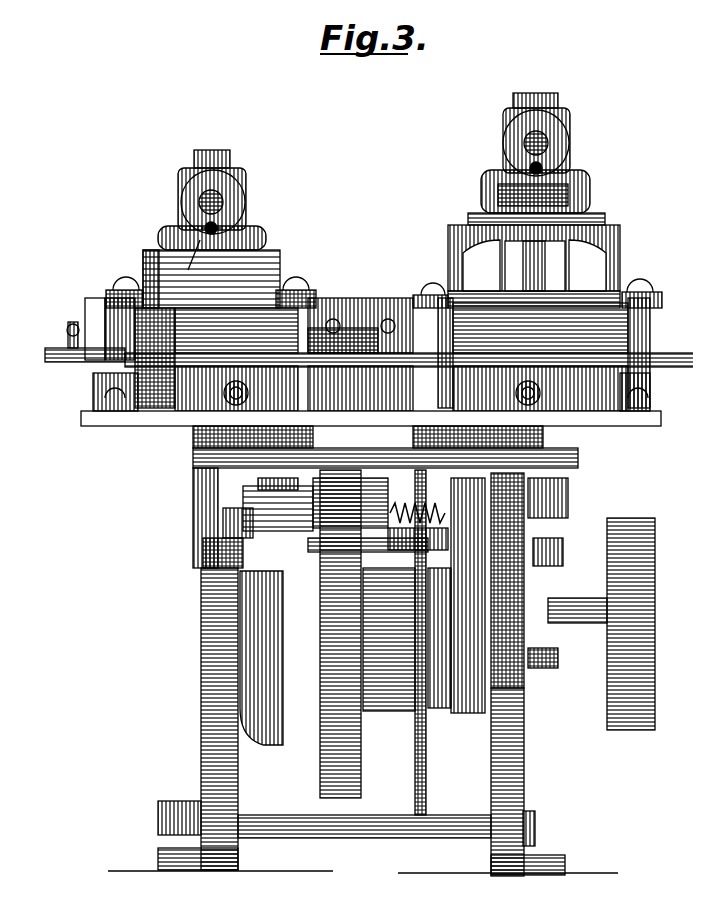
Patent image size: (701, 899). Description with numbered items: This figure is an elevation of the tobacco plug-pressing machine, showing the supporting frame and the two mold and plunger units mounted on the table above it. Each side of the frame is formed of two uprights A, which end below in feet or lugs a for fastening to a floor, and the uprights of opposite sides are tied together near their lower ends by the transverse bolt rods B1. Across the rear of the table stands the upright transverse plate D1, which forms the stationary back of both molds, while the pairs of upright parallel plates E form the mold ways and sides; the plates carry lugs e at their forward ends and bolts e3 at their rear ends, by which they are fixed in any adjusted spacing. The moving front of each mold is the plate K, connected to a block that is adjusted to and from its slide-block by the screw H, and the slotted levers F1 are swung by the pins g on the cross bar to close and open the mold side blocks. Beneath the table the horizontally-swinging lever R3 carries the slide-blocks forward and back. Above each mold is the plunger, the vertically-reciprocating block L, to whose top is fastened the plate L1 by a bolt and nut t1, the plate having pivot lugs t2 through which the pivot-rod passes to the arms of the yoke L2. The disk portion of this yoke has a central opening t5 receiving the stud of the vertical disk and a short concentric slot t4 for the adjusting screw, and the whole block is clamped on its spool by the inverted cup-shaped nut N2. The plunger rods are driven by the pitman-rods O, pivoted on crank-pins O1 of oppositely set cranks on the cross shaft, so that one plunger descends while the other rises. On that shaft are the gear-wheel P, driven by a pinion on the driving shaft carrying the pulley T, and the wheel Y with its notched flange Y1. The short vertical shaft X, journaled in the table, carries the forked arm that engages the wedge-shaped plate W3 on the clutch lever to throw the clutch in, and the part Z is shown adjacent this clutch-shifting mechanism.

The inverted cup-shaped nut N2 is at (224, 154).
The central opening of yoke disk t5 is at (215, 194).
The concentric slot of yoke t4 is at (197, 220).
The yoke L2 is at (250, 218).
The screw H is at (211, 279).
The nut t1 is at (192, 256).
The bolts e3 is at (384, 283).
The pivot lugs t2 is at (464, 188).
The plate or bar L1 is at (597, 210).
The plunger block L is at (487, 230).
The upright transverse plate D1 is at (395, 288).
The moving front plate K is at (544, 354).
The lever F1 is at (37, 350).
The upright parallel plates E is at (428, 275).
The lugs or flanges e is at (73, 410).
The pins g is at (180, 430).
The horizontally-swinging lever R3 is at (385, 447).
The slotted wedge plate W3 is at (175, 592).
The vertical shaft X is at (350, 527).
The spring Z is at (418, 518).
The flange Y1 is at (312, 757).
The wheel Y is at (424, 625).
The gear-wheel P is at (409, 642).
The pitman-rods O is at (193, 655).
The crank-pins O1 is at (175, 712).
The uprights A is at (347, 674).
The pulley or wheel T is at (600, 600).
The transverse bolt rods B1 is at (364, 835).
The feet or lugs a is at (363, 861).